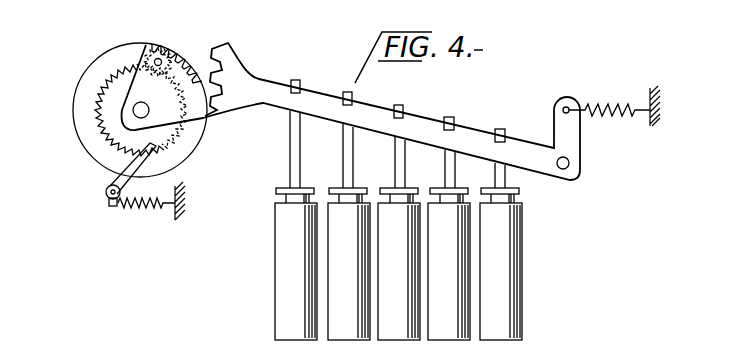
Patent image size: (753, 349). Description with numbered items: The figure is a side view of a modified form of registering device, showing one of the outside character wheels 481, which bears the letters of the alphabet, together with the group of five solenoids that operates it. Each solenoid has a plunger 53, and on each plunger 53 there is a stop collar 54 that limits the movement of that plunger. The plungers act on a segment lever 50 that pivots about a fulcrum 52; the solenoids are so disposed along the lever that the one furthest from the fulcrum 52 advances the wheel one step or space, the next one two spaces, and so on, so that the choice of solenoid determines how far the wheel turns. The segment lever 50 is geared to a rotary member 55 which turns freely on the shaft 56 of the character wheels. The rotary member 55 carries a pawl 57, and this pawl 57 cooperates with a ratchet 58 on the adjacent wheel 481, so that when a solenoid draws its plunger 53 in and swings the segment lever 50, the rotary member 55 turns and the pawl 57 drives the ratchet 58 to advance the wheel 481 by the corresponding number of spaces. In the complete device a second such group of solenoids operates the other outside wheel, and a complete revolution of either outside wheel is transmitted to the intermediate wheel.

The outside wheel 481 is at (90, 73).
The segment lever 50 is at (418, 127).
The fulcrum 52 is at (570, 163).
The plunger 53 is at (393, 152).
The stop collar 54 is at (277, 190).
The rotary member 55 is at (147, 58).
The shaft 56 is at (146, 112).
The pawl 57 is at (179, 60).
The ratchet 58 is at (100, 118).